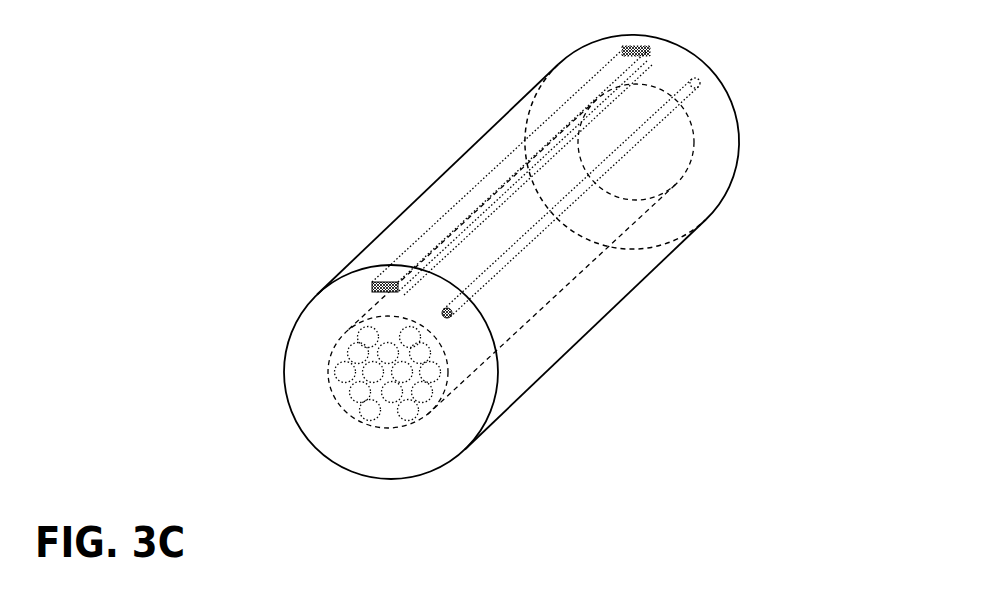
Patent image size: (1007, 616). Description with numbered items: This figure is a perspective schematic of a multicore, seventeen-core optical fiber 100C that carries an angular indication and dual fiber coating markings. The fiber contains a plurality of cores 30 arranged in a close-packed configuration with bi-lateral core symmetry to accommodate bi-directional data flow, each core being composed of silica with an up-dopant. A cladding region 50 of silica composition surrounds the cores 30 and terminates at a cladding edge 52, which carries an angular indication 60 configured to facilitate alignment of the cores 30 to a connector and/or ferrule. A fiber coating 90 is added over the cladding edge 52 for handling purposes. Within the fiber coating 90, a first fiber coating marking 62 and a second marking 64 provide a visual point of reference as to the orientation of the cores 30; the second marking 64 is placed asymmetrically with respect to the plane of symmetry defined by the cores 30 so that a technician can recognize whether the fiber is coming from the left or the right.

The multicore optical fiber 100C is at (800, 125).
The fiber coating 90 is at (303, 367).
The cladding edge 52 is at (578, 278).
The angular indication 60 is at (385, 318).
The cladding region 50 is at (386, 412).
The cores 30 is at (438, 386).
The fiber coating marking 62 is at (384, 280).
The second marking 64 is at (450, 320).